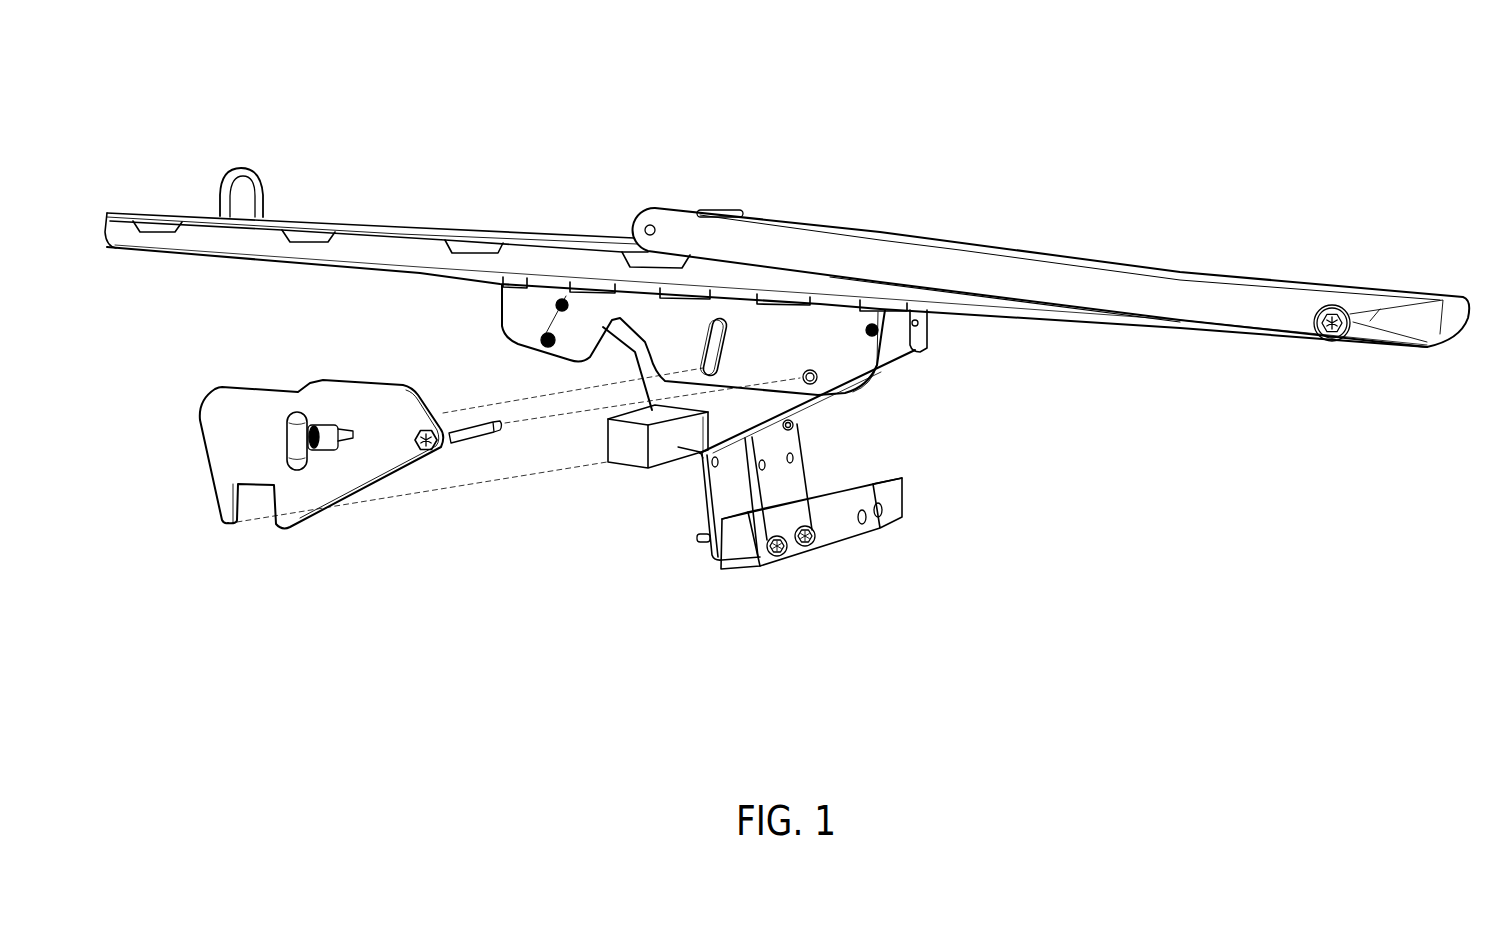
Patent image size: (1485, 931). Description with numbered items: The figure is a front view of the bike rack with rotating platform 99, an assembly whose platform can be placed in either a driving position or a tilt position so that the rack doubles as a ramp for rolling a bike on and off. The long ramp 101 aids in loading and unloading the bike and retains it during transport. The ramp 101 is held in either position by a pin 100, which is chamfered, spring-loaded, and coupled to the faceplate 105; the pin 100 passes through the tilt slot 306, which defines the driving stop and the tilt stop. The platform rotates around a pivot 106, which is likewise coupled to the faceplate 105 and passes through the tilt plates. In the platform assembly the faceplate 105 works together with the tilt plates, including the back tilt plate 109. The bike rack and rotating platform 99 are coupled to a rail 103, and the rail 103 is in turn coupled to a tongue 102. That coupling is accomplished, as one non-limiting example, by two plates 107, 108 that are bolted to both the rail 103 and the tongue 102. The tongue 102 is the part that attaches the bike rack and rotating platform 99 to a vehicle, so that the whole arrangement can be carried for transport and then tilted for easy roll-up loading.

The bike rack with rotating platform 99 is at (160, 68).
The ramp 101 is at (160, 213).
The tilt slot 306 is at (722, 346).
The back tilt plate 109 is at (913, 342).
The pin 100 is at (288, 438).
The pivot 106 is at (467, 438).
The faceplate 105 is at (323, 502).
The rail 103 is at (627, 458).
The plate 108 is at (700, 484).
The plate 107 is at (795, 478).
The tongue 102 is at (840, 530).